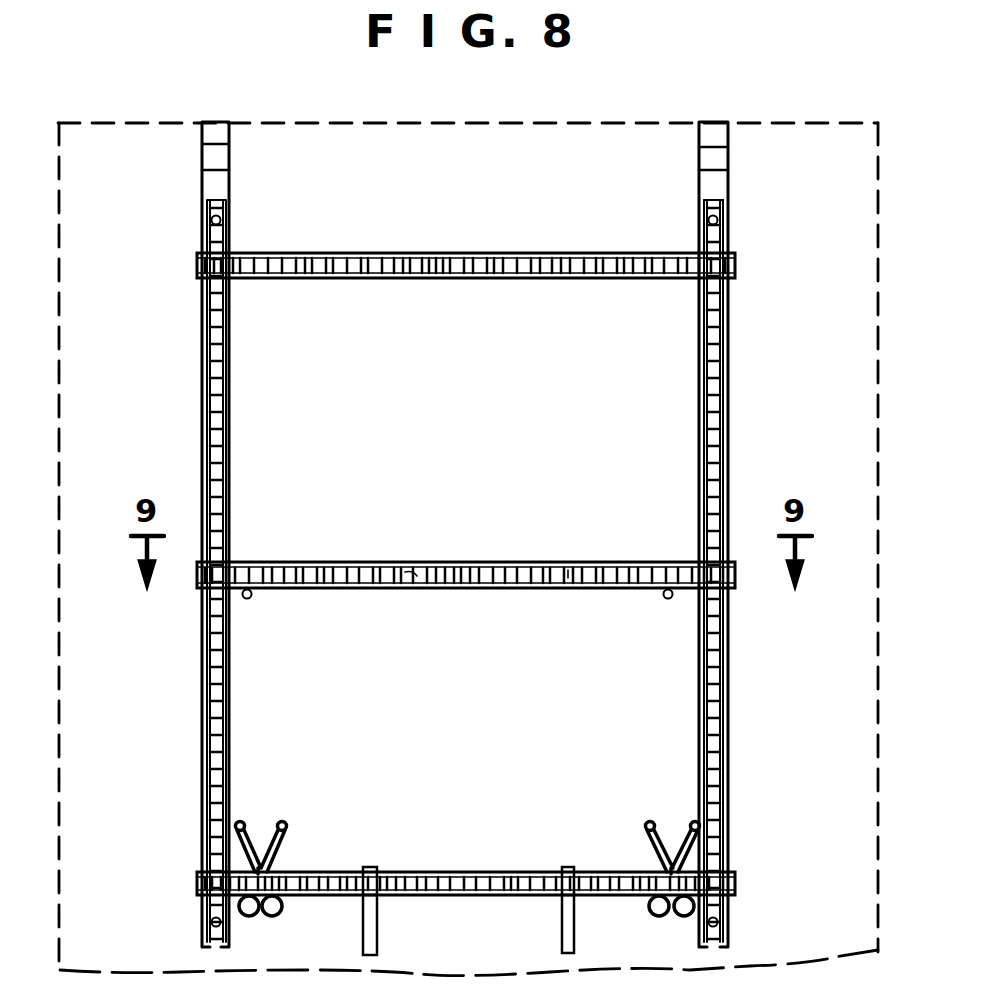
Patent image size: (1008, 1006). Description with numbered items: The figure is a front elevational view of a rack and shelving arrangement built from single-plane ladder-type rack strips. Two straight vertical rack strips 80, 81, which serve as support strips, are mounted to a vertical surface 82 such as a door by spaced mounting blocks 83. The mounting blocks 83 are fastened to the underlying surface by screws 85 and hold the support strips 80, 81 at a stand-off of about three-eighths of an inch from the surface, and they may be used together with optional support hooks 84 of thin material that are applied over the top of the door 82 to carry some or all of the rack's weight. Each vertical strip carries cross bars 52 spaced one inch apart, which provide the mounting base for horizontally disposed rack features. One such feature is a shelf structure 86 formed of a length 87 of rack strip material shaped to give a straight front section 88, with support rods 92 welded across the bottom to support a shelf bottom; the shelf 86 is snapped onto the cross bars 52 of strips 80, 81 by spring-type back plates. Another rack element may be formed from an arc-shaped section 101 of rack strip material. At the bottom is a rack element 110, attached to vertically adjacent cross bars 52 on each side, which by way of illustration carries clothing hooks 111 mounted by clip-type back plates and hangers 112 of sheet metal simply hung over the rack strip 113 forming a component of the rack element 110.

The vertical surface 82 is at (108, 151).
The support hooks 84 is at (214, 158).
The mounting blocks 83 is at (220, 222).
The screws 85 is at (713, 228).
The arc-shaped section of rack strip material 101 is at (510, 282).
The vertical rack strip 80 is at (230, 414).
The vertical rack strip 81 is at (728, 402).
The shelf structure 86 is at (502, 558).
The length of rack strip material 87 is at (416, 578).
The straight front section 88 is at (570, 580).
The support rods 92 is at (250, 600).
The cross bars 52 is at (228, 712).
The clothing hooks 111 is at (273, 840).
The rack element 110 is at (488, 870).
The hangers 112 is at (362, 938).
The rack strip 113 is at (512, 896).